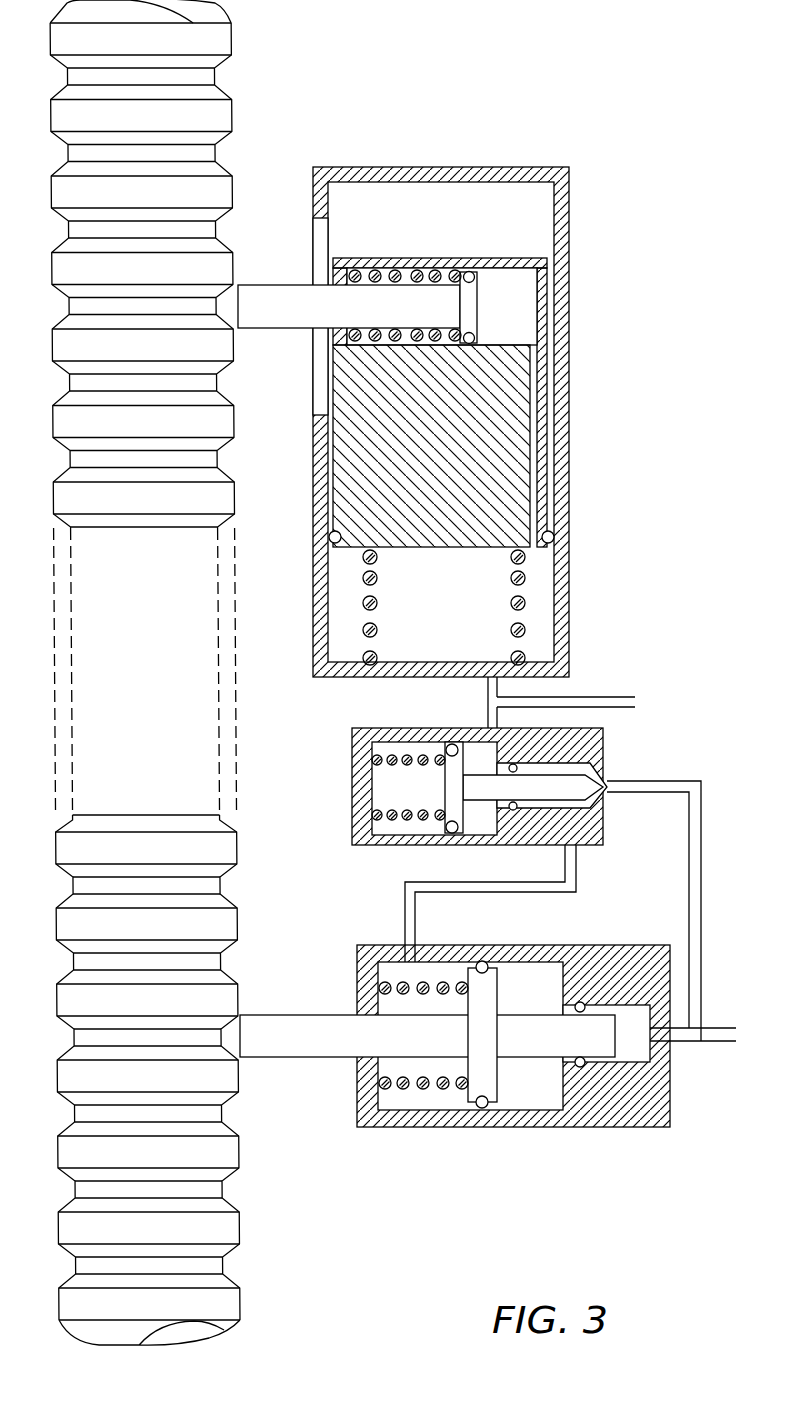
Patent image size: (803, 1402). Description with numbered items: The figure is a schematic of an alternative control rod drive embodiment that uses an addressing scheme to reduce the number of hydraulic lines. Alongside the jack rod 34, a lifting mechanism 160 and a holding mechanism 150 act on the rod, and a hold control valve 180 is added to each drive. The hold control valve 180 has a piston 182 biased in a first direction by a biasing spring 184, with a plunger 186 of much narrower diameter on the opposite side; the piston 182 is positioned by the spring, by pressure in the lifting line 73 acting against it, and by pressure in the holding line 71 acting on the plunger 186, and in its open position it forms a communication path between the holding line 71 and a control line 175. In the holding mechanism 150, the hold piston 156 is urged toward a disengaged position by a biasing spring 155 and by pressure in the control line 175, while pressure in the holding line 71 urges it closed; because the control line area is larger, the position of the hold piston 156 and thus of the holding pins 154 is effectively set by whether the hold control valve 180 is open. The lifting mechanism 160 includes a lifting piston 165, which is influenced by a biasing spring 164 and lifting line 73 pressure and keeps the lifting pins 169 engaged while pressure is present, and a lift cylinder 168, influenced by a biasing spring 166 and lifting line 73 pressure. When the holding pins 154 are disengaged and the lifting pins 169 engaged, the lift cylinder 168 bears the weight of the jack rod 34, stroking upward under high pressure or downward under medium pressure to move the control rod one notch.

The jack rod 34 is at (223, 107).
The lifting mechanism 160 is at (583, 293).
The biasing spring 164 is at (378, 267).
The lifting piston 165 is at (420, 298).
The biasing spring 166 is at (527, 602).
The lift cylinder 168 is at (510, 388).
The lifting pins 169 is at (285, 293).
The lifting line 73 is at (620, 697).
The hold control valve 180 is at (348, 780).
The piston 182 is at (463, 760).
The biasing spring 184 is at (402, 755).
The plunger 186 is at (573, 782).
The control line 175 is at (505, 892).
The holding mechanism 150 is at (618, 1143).
The holding pins 154 is at (330, 1028).
The biasing spring 155 is at (428, 1087).
The hold piston 156 is at (493, 1093).
The holding line 71 is at (710, 1041).